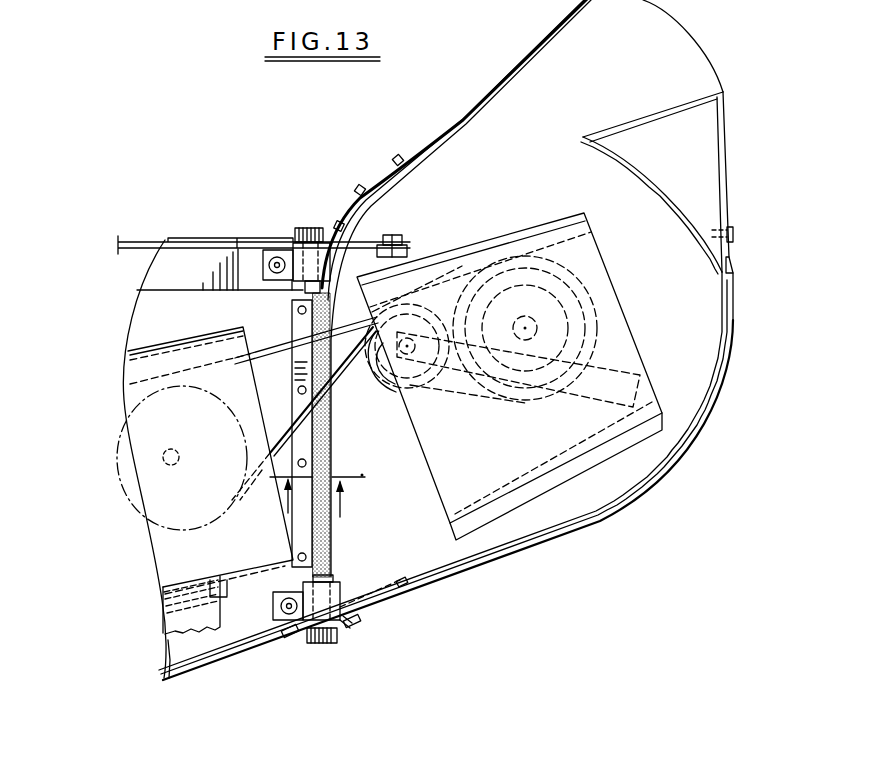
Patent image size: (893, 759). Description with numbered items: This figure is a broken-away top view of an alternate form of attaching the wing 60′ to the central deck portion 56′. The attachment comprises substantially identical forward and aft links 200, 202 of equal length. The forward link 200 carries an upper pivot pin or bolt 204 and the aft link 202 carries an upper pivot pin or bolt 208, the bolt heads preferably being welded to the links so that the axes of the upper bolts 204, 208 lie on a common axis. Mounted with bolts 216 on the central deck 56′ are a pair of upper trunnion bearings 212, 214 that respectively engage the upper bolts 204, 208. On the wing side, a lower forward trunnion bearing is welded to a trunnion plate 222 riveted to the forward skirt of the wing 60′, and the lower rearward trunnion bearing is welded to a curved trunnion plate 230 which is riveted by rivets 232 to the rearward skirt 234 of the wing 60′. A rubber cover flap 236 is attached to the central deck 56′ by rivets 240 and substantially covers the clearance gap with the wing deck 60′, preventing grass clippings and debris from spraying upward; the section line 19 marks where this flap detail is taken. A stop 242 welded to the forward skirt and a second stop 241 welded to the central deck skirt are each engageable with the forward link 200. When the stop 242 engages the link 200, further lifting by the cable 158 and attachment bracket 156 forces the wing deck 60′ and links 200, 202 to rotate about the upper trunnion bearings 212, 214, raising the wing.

The cable 158 is at (152, 240).
The upper pivot pin or bolt 208 is at (306, 228).
The aft link 202 is at (331, 232).
The curved trunnion plate 230 is at (360, 186).
The rivets 232 is at (388, 158).
The rearward skirt 234 is at (474, 101).
The attachment bracket 156 is at (410, 247).
The upper trunnion bearing 214 is at (293, 282).
The rubber cover flap 236 is at (327, 418).
The rivets 240 is at (300, 457).
The section line 19- 19 is at (314, 499).
The bolts 216 is at (276, 605).
The central deck portion 56′ is at (243, 623).
The second stop 241 is at (298, 636).
The upper pivot pin or bolt 204 is at (324, 645).
The forward link 200 is at (340, 627).
The trunnion plate 222 is at (367, 588).
The stop 242 is at (362, 617).
The upper trunnion bearing 212 is at (347, 624).
The wing 60′ is at (602, 500).